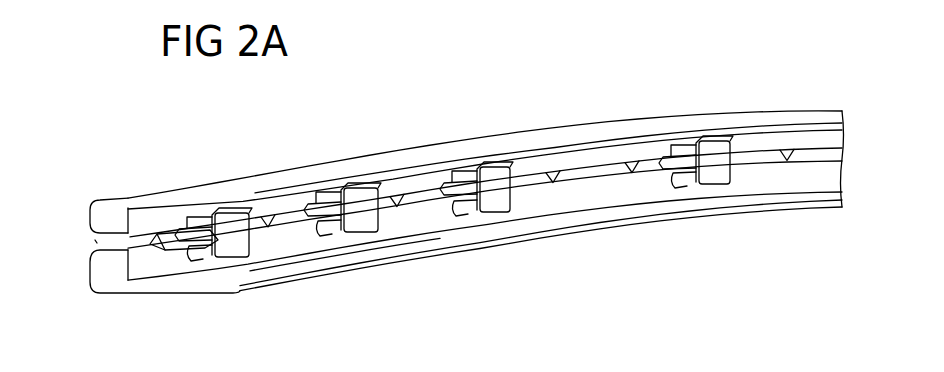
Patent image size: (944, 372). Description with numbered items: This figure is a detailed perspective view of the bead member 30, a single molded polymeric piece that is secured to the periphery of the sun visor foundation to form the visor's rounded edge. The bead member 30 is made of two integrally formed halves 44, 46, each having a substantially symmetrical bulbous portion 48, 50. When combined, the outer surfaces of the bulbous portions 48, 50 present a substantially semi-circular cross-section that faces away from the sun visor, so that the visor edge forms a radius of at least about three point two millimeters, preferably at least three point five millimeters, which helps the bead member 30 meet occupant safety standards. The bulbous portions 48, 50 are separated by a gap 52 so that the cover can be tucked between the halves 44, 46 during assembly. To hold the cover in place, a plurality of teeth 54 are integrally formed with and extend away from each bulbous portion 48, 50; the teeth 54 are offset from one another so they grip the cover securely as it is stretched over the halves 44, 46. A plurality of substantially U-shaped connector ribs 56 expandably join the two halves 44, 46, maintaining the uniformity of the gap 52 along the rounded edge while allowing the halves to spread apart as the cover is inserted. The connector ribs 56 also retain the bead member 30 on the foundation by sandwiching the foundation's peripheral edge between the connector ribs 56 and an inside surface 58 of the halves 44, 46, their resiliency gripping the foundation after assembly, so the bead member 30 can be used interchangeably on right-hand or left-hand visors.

The bead member 30 is at (435, 196).
The half 44 is at (188, 190).
The half 46 is at (180, 293).
The bulbous portion 48 is at (107, 214).
The bulbous portion 50 is at (107, 270).
The gap 52 is at (97, 243).
The teeth 54 is at (157, 236).
The connector ribs 56 is at (245, 243).
The inside surface 58 is at (253, 272).